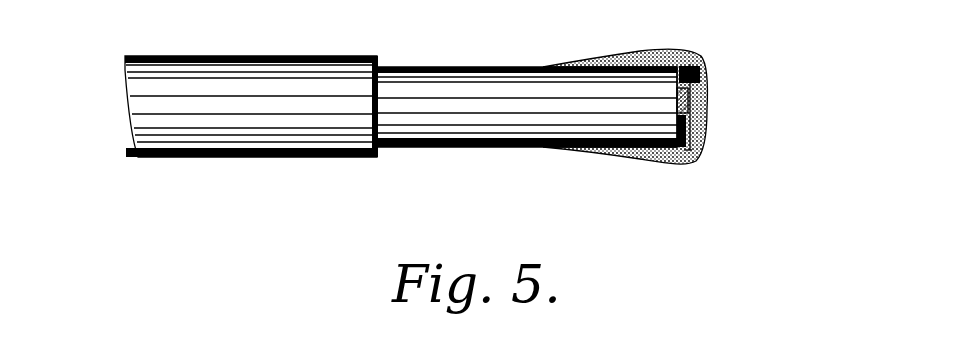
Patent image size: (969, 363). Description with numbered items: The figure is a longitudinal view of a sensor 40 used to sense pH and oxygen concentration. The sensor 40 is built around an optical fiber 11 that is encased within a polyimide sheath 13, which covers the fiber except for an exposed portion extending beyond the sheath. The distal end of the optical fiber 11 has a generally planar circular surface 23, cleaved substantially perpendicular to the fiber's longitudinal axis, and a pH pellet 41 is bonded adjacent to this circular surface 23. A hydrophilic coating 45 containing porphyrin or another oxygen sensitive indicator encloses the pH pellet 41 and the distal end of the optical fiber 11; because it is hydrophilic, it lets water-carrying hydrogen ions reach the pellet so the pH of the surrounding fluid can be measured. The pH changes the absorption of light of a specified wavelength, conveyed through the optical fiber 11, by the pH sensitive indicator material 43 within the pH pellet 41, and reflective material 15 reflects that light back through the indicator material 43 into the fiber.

The optical fiber 11 is at (462, 72).
The polyimide sheath 13 is at (238, 56).
The reflective material 15 is at (703, 107).
The circular surface 23 is at (702, 72).
The sensor 40 is at (166, 194).
The pH pellet 41 is at (697, 60).
The pH sensitive indicator material 43 is at (692, 150).
The hydrophilic coating 45 is at (705, 140).